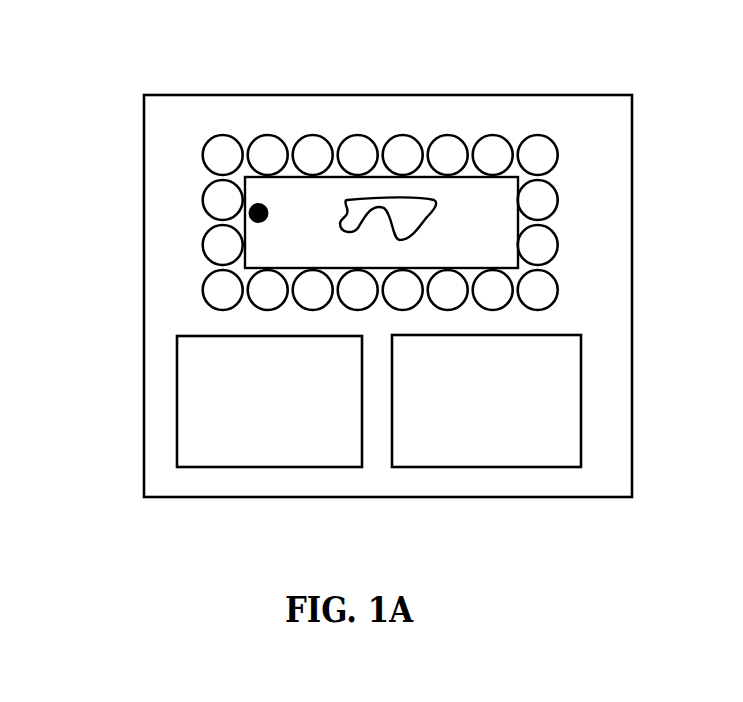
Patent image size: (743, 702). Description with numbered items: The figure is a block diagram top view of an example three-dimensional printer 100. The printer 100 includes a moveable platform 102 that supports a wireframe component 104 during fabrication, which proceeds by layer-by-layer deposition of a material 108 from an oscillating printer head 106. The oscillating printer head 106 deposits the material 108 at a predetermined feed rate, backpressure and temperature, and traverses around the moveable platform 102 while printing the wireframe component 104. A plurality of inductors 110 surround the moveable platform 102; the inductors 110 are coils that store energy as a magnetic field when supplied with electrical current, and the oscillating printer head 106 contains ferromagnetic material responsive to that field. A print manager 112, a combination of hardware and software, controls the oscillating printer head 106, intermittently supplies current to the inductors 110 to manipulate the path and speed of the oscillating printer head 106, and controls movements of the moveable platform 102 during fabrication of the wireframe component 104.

The 3D printer 100 is at (270, 95).
The moveable platform 102 is at (475, 198).
The wireframe component 104 is at (395, 200).
The oscillating printer head 106 is at (250, 214).
The material 108 is at (251, 428).
The inductors 110 is at (220, 135).
The print manager 112 is at (571, 428).